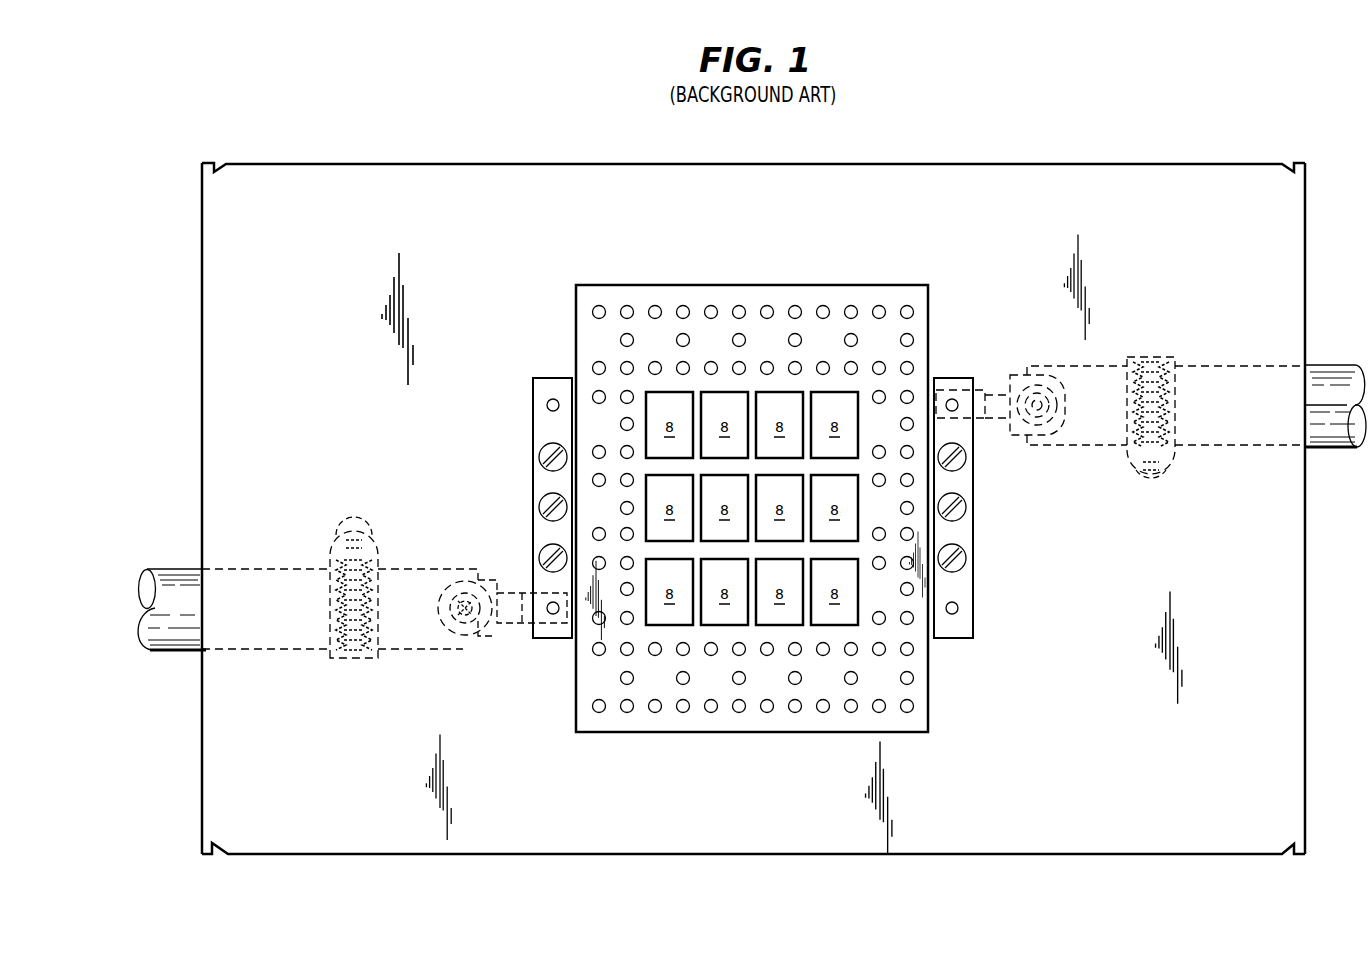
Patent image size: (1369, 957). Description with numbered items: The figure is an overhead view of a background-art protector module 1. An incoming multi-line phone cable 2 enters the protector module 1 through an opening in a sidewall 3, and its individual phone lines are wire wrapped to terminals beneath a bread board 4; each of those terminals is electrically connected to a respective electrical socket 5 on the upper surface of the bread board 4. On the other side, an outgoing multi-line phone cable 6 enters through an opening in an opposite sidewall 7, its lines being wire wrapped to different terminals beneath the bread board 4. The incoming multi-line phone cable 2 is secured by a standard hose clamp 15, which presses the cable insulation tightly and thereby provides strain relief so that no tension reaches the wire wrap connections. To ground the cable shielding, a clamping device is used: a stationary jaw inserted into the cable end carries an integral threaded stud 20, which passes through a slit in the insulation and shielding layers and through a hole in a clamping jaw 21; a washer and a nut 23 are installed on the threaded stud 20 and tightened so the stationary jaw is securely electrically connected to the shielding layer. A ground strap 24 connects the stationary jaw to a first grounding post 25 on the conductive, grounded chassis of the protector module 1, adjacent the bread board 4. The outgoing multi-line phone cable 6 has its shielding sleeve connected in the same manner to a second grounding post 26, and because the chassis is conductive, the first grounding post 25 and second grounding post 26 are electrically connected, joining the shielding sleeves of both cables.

The protector module 1 is at (785, 543).
The incoming multi-line phone cable 2 is at (166, 569).
The sidewall 3 is at (203, 424).
The bread board 4 is at (836, 285).
The electrical socket 5 is at (705, 362).
The outgoing multi-line phone cable 6 is at (1320, 365).
The opposite sidewall 7 is at (1306, 600).
The hose clamp 15 is at (332, 560).
The threaded stud 20 is at (463, 637).
The clamping jaw 21 is at (487, 640).
The nut 23 is at (459, 578).
The ground strap 24 is at (503, 628).
The first grounding post 25 is at (545, 430).
The second grounding post 26 is at (957, 582).